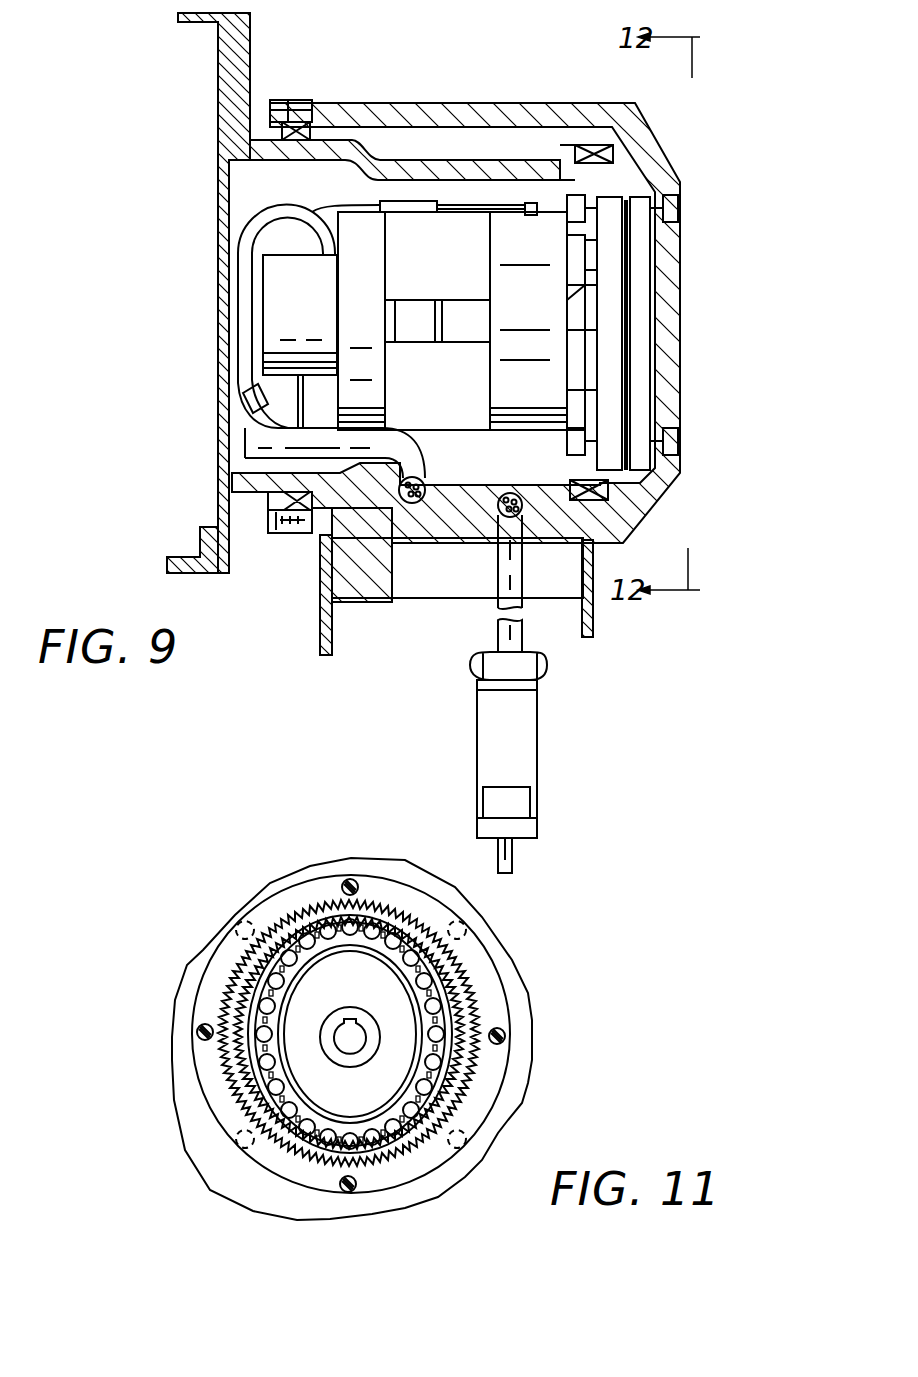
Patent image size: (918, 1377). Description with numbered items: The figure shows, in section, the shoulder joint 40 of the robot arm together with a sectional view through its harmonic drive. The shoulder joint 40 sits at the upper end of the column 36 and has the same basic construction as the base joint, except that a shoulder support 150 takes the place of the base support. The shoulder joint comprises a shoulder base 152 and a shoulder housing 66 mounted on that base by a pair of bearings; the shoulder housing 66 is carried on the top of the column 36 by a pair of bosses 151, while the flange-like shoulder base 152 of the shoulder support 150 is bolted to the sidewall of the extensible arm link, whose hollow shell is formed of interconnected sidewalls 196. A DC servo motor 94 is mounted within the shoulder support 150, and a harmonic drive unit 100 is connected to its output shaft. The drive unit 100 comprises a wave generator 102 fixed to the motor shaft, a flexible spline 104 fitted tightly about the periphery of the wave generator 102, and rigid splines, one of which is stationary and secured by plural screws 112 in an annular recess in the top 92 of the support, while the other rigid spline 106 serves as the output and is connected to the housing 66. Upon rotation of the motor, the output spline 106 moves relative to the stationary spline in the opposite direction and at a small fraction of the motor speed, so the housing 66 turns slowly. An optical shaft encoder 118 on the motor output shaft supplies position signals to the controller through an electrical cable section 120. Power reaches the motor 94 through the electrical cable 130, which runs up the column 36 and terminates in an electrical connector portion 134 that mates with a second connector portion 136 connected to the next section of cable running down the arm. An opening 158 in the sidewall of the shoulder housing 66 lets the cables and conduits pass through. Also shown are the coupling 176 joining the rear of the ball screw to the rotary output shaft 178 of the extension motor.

In FIG. 9, the column 36 is at (312, 614).
In FIG. 9, the shoulder joint 40 is at (688, 300).
In FIG. 9, the shoulder housing 66 is at (684, 372).
In FIG. 11, the shoulder housing 66 is at (185, 996).
In FIG. 11, the top 92 is at (240, 1090).
In FIG. 9, the DC servo motor 94 is at (545, 300).
In FIG. 9, the harmonic drive unit 100 is at (612, 334).
In FIG. 11, the harmonic drive unit 100 is at (570, 1014).
In FIG. 11, the wave generator 102 is at (432, 982).
In FIG. 11, the flexible spline 104 is at (455, 1070).
In FIG. 9, the rigid spline 106 is at (640, 258).
In FIG. 11, the rigid spline 106 is at (472, 1098).
In FIG. 9, the screws 112 is at (666, 216).
In FIG. 11, the screws 112 is at (196, 1036).
In FIG. 9, the optical shaft encoder 118 is at (316, 312).
In FIG. 9, the electrical cable section 120 is at (242, 375).
In FIG. 9, the electrical cable 130 is at (520, 636).
In FIG. 9, the electrical connector portion 134 is at (527, 722).
In FIG. 9, the second connector portion 136 is at (527, 808).
In FIG. 9, the shoulder support 150 is at (254, 70).
In FIG. 9, the bosses 151 is at (380, 590).
In FIG. 9, the shoulder base 152 is at (232, 556).
In FIG. 9, the opening 158 is at (488, 470).
In FIG. 9, the coupling 176 is at (306, 118).
In FIG. 9, the rotary output shaft 178 is at (590, 144).
In FIG. 9, the sidewalls 196 is at (240, 352).
In FIG. 11, the sidewalls 196 is at (355, 1032).